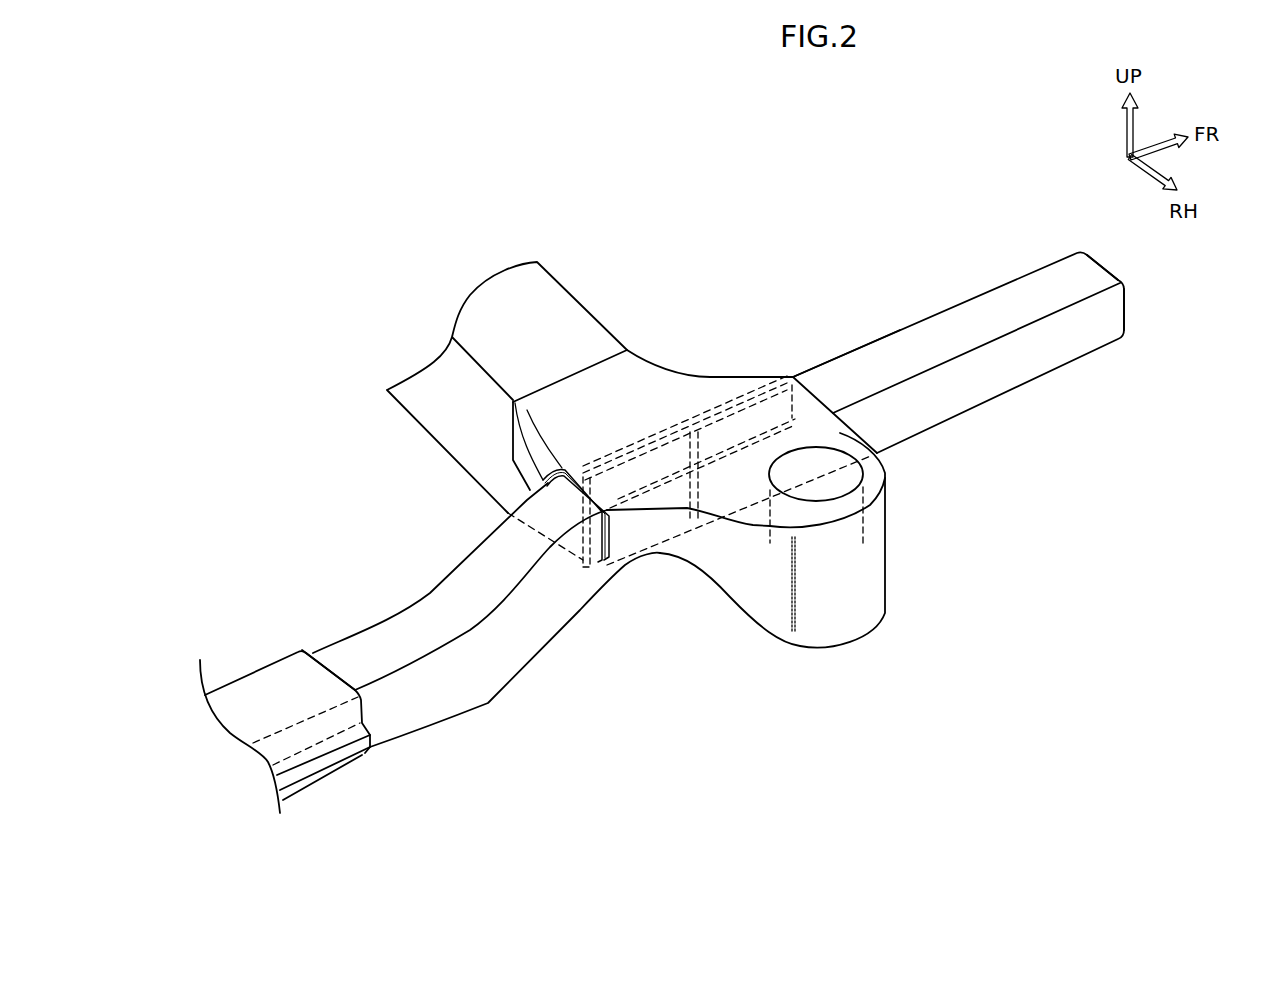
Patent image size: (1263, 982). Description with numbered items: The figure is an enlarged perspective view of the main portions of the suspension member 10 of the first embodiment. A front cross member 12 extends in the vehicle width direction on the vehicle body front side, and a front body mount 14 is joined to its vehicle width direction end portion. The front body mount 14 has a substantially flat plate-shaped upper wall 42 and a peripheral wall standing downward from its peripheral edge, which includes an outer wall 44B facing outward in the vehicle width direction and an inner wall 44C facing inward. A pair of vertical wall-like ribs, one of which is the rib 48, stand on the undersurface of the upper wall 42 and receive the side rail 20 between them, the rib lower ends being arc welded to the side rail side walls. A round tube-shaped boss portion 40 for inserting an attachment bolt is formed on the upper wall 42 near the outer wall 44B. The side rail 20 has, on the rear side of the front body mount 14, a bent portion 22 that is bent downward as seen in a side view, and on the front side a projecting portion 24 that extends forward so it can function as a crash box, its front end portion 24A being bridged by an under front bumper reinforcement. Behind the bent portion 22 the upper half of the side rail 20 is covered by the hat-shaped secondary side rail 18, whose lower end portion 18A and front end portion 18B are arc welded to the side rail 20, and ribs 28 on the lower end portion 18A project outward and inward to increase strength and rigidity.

The suspension member 10 is at (721, 187).
The front cross member 12 is at (580, 291).
The front body mount 14 is at (718, 366).
The secondary side rail 18 is at (285, 683).
The lower end portion of secondary side rail 18A is at (328, 767).
The front end portion of secondary side rail 18B is at (338, 673).
The side rail 20 is at (850, 348).
The bent portion 22 is at (488, 703).
The projecting portion 24 is at (978, 308).
The front end portion of projecting portion 24A is at (1130, 317).
The rib 28 is at (358, 747).
The boss portion 40 is at (860, 478).
The upper wall 42 is at (845, 432).
The outer wall 44B is at (828, 574).
The inner wall 44C is at (508, 449).
The rib 48 is at (837, 377).